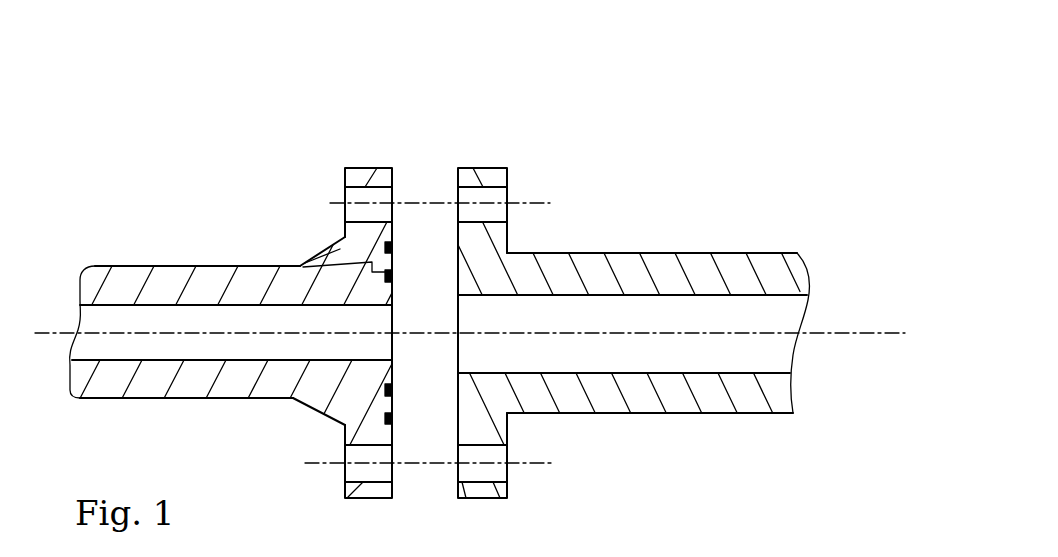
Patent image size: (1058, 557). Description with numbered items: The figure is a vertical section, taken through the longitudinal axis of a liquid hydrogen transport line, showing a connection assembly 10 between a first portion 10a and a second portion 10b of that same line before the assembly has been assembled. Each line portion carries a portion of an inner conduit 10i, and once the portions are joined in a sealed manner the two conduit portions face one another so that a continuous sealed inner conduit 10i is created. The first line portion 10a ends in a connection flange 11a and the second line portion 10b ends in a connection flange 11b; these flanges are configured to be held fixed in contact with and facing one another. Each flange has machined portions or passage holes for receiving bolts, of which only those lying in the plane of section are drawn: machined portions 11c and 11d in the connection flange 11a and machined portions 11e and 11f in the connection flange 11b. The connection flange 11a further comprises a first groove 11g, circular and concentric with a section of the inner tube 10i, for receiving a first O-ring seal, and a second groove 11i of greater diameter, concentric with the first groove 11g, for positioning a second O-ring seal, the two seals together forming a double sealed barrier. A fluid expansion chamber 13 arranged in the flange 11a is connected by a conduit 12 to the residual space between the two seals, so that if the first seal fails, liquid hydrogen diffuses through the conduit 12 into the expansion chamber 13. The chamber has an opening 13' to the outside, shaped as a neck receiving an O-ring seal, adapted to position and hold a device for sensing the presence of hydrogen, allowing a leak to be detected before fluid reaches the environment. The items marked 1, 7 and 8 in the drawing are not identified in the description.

The connection assembly 10 is at (438, 80).
The first portion of a line 10a is at (132, 264).
The second portion of a line 10b is at (703, 252).
The inner conduit 10i is at (97, 317).
The connection flange 11a is at (356, 175).
The connection flange 11b is at (490, 178).
The machined portion 11c is at (380, 465).
The machined portion 11d is at (382, 198).
The machined portion 11e is at (490, 470).
The machined portion 11f is at (493, 208).
The first groove 11g is at (387, 388).
The second groove 11i is at (387, 421).
The conduit 12 is at (385, 246).
The fluid expansion chamber 13 is at (307, 238).
The opening 13' is at (272, 250).
The sealing element 1 is at (395, 245).
The flange gap 7 is at (425, 333).
The bolt axis 8 is at (428, 339).